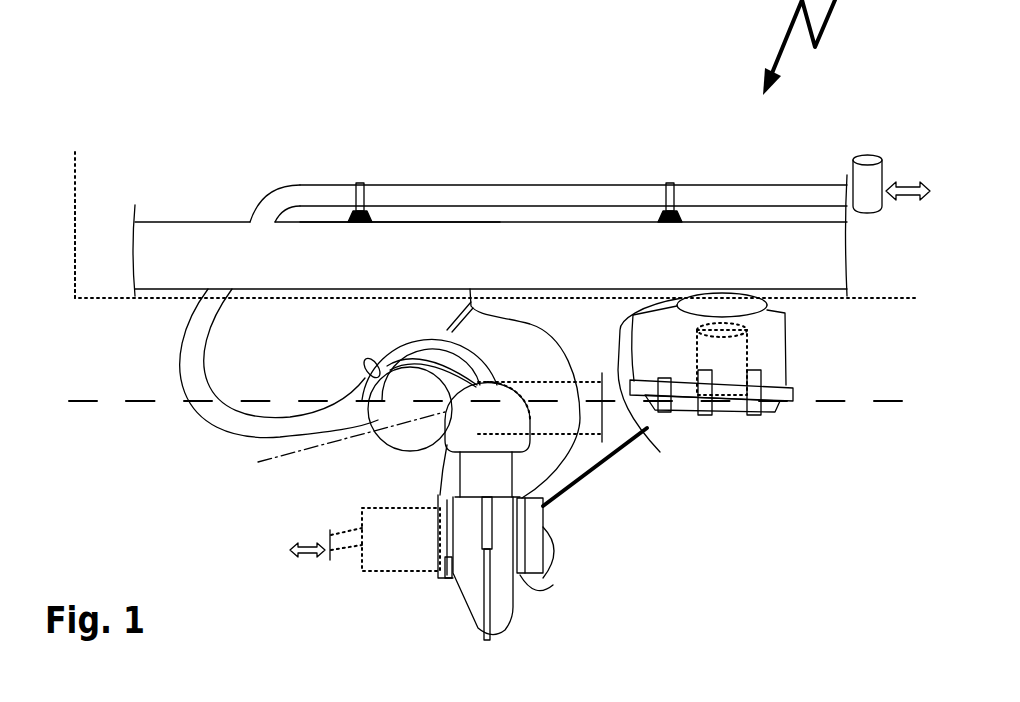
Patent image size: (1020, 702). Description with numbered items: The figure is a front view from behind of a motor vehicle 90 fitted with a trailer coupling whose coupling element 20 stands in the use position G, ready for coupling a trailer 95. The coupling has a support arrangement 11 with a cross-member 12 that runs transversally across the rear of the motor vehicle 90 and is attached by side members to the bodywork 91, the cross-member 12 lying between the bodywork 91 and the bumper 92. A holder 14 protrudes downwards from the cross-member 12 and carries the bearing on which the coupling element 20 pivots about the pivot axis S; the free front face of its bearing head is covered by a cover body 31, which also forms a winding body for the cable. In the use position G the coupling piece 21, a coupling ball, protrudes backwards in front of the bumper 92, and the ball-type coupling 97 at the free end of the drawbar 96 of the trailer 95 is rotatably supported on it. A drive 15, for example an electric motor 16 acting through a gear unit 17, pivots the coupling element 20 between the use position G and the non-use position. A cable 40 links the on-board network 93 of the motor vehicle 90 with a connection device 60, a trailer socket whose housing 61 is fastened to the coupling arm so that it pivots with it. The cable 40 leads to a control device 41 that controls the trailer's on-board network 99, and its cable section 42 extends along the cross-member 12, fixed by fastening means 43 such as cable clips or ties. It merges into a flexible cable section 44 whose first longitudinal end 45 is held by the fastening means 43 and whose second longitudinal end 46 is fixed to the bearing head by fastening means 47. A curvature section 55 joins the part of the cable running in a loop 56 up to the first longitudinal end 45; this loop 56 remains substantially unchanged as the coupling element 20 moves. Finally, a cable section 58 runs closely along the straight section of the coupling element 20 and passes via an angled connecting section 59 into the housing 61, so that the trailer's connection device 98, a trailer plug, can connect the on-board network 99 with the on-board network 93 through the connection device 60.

The support arrangement 11 is at (176, 212).
The cross-member 12 is at (228, 220).
The holder 14 is at (640, 435).
The drive 15 is at (758, 420).
The electric motor 16 is at (748, 350).
The gear unit 17 is at (725, 376).
The coupling element 20 is at (530, 618).
The coupling piece 21 is at (455, 444).
The cover body 31 is at (388, 436).
The cable 40 is at (548, 158).
The control device or connection device 41 is at (868, 158).
The cable section 42 is at (535, 190).
The fastening means 43 is at (358, 183).
The cable section 44 is at (190, 410).
The first longitudinal end 45 is at (283, 196).
The second longitudinal end 46 is at (400, 348).
The fastening means 47 is at (362, 366).
The curvature section 55 is at (228, 421).
The loop 56 is at (208, 333).
The cable section 58 is at (550, 588).
The connecting section 59 is at (561, 550).
The connection device 60 is at (430, 588).
The housing 61 is at (545, 512).
The motor vehicle 90 is at (77, 160).
The bodywork 91 is at (73, 232).
The bumper 92 is at (80, 398).
The on-board network 93 is at (900, 185).
The trailer 95 is at (583, 366).
The drawbar 96 is at (590, 441).
The ball-type coupling 97 is at (455, 420).
The connection device 98 is at (362, 571).
The on-board network 99 is at (308, 558).
The use position G is at (470, 632).
The pivot axis S is at (275, 455).